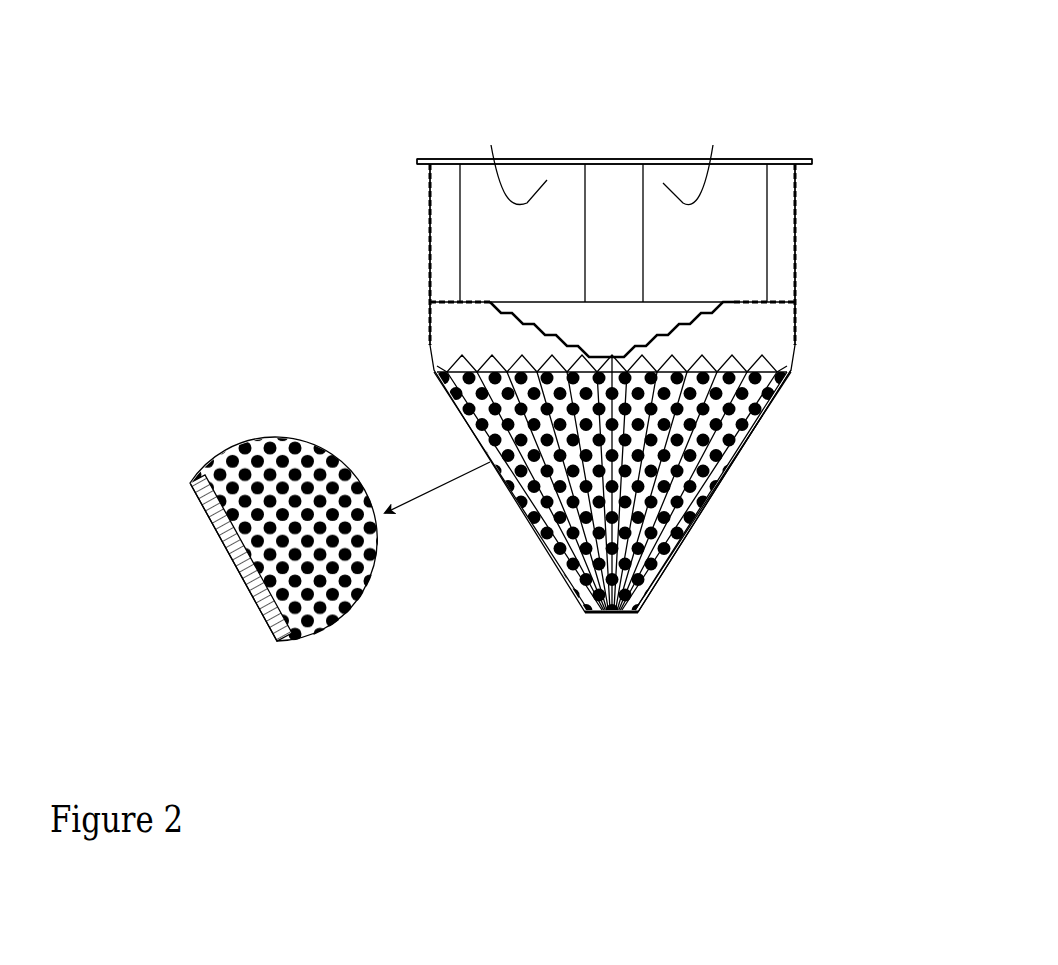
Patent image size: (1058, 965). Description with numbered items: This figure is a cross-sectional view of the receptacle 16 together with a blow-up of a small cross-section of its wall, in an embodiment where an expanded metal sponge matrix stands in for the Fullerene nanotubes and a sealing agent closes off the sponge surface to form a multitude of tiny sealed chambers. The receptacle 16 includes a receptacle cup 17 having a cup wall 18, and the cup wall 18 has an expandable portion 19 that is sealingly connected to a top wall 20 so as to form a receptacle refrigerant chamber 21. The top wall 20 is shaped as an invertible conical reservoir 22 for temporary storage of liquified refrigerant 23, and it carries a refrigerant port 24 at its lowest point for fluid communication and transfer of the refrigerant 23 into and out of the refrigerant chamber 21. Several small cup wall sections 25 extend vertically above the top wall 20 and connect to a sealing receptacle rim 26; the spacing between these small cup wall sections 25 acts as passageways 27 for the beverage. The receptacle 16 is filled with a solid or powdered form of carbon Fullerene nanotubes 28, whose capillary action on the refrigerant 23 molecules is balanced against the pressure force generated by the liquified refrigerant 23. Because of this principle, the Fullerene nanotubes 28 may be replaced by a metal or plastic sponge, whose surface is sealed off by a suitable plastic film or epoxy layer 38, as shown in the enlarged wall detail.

The receptacle 16 is at (792, 126).
The receptacle cup 17 is at (798, 345).
The cup wall 18 is at (762, 415).
The expandable portion 19 is at (440, 355).
The top wall 20 is at (452, 300).
The receptacle refrigerant chamber 21 is at (748, 338).
The invertible conical reservoir 22 is at (650, 337).
The liquified refrigerant 23 is at (710, 493).
The refrigerant port 24 is at (613, 353).
The small cup wall sections 25 is at (453, 175).
The sealing receptacle rim 26 is at (417, 157).
The passageways 27 is at (491, 145).
The Fullerene nanotubes 28 is at (687, 527).
The epoxy layer 38 is at (200, 483).